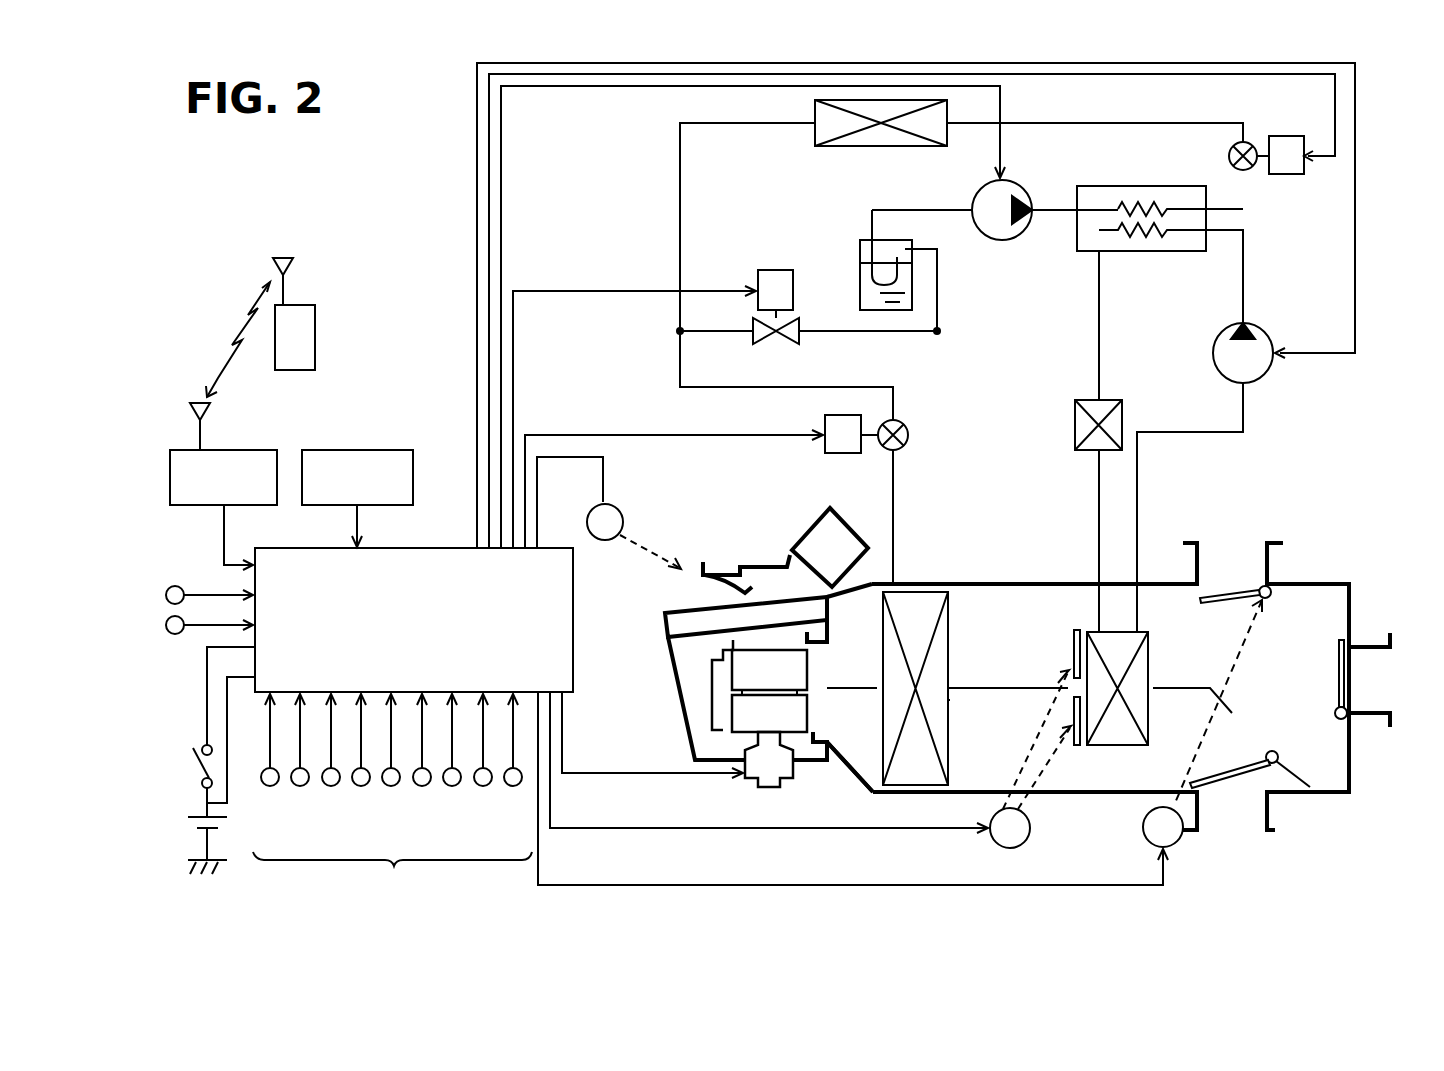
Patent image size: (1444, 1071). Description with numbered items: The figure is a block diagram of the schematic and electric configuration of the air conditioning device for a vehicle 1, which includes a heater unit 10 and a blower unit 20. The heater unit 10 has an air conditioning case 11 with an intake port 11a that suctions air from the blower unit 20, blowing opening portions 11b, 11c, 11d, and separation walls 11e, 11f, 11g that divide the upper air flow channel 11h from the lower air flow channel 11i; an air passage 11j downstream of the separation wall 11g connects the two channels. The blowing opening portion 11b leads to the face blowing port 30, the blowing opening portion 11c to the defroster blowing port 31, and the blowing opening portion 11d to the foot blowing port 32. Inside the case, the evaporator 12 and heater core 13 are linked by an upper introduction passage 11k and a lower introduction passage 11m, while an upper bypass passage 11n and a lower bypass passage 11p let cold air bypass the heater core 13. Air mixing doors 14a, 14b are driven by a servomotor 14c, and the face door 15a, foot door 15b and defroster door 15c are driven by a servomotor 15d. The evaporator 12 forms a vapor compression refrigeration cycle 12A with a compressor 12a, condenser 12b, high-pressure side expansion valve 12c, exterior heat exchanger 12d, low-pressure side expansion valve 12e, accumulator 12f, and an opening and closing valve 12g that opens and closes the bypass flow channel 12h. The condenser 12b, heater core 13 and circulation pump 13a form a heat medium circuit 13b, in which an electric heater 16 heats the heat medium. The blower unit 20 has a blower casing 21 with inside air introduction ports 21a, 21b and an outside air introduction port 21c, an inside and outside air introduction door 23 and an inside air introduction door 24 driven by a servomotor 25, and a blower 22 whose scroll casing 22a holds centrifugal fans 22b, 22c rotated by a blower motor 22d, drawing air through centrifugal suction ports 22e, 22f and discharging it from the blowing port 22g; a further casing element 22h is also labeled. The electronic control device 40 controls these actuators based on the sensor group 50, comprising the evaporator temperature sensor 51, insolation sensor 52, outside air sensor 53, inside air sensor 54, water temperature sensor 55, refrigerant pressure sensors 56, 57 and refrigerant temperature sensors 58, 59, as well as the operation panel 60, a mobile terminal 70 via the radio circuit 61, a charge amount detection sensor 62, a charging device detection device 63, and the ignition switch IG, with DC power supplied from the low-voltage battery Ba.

The air conditioning device for a vehicle 1 is at (643, 887).
The heater unit 10 is at (1345, 578).
The air conditioning case 11 is at (968, 588).
The intake port 11a is at (825, 683).
The blowing opening portion 11b is at (1349, 662).
The blowing opening portion 11c is at (1207, 589).
The blowing opening portion 11d is at (1253, 792).
The separation wall 11e is at (860, 690).
The separation wall 11f is at (987, 690).
The separation wall 11g is at (1175, 685).
The upper air flow channel 11h is at (963, 648).
The lower air flow channel 11i is at (982, 751).
The air passage 11j is at (1253, 732).
The upper introduction passage 11k is at (1068, 630).
The lower introduction passage 11m is at (1025, 713).
The upper bypass passage 11n is at (1083, 603).
The lower bypass passage 11p is at (1118, 765).
The evaporator 12 is at (920, 777).
The refrigeration cycle 12A is at (670, 198).
The compressor 12a is at (1020, 185).
The condenser 12b is at (1165, 186).
The high-pressure side expansion valve 12c is at (1287, 136).
The exterior heat exchanger 12d is at (832, 146).
The low-pressure side expansion valve 12e is at (828, 413).
The accumulator 12f is at (858, 242).
The opening and closing valve 12g is at (768, 268).
The bypass flow channel 12h is at (718, 333).
The heater core 13 is at (1105, 737).
The circulation pump 13a is at (1262, 333).
The heat medium circuit 13b is at (1090, 367).
The air mixing door 14a is at (1060, 650).
The air mixing door 14b is at (1068, 792).
The servomotor 14c is at (1025, 842).
The face door 15a is at (1347, 683).
The foot door 15b is at (1228, 778).
The defroster door 15c is at (1262, 582).
The servomotor 15d is at (1180, 838).
The electric heater 16 is at (1122, 410).
The blower unit 20 is at (727, 673).
The blower casing 21 is at (697, 750).
The inside air introduction port 21a is at (688, 594).
The inside air introduction port 21b is at (772, 568).
The outside air introduction port 21c is at (835, 553).
The blower 22 is at (707, 713).
The scroll casing 22a is at (740, 773).
The centrifugal fan 22b is at (717, 683).
The centrifugal fan 22c is at (743, 738).
The blower motor 22d is at (768, 777).
The centrifugal suction port 22e is at (768, 637).
The centrifugal suction port 22f is at (720, 730).
The blowing port 22g is at (815, 677).
The filter holder 22h is at (677, 626).
The inside and outside air introduction door 23 is at (745, 558).
The inside air introduction door 24 is at (705, 580).
The servomotor 25 is at (620, 510).
The face blowing port 30 is at (1387, 660).
The defroster blowing port 31 is at (1233, 550).
The foot blowing port 32 is at (1215, 830).
The electronic control device 40 is at (432, 545).
The sensor group 50 is at (392, 874).
The evaporator temperature sensor 51 is at (270, 786).
The insolation sensor 52 is at (300, 786).
The outside air sensor 53 is at (331, 786).
The inside air sensor 54 is at (361, 786).
The water temperature sensor 55 is at (391, 786).
The refrigerant pressure sensor 56 is at (422, 786).
The refrigerant pressure sensor 57 is at (452, 786).
The refrigerant temperature sensor 58 is at (483, 786).
The refrigerant temperature sensor 59 is at (513, 786).
The operation panel 60 is at (390, 450).
The radio circuit 61 is at (275, 450).
The charge amount detection sensor 62 is at (175, 634).
The charging device detection device 63 is at (175, 586).
The mobile terminal 70 is at (315, 335).
The ignition switch IG is at (192, 767).
The low-voltage battery Ba is at (185, 825).